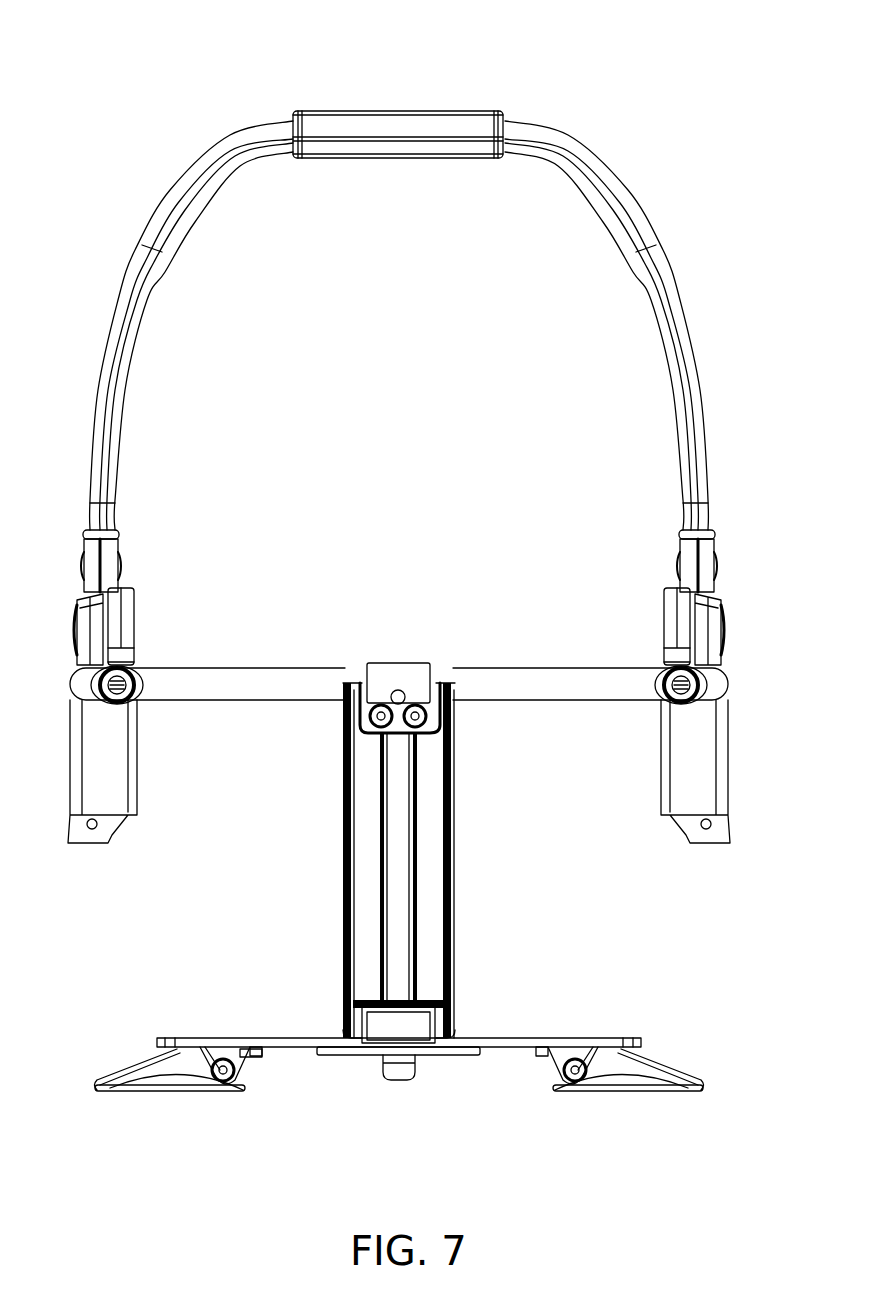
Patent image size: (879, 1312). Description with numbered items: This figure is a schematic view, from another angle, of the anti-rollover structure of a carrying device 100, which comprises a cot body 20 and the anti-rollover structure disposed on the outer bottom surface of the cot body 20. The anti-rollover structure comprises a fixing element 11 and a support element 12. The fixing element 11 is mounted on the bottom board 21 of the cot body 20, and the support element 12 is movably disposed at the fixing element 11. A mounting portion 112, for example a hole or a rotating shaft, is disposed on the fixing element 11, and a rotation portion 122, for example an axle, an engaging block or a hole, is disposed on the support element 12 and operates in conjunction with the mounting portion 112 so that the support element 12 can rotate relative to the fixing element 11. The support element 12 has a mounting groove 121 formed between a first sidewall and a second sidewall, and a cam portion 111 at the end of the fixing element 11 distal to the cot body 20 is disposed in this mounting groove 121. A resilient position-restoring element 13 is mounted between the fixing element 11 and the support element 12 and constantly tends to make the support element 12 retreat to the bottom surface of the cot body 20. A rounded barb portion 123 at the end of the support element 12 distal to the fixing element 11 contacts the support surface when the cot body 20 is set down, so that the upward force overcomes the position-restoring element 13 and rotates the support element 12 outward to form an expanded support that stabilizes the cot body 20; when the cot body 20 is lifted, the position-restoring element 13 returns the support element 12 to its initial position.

The carrying device 100 is at (107, 48).
The cot body 20 is at (113, 370).
The bottom board 21 is at (222, 1043).
The fixing element 11 is at (584, 1060).
The support element 12 is at (640, 1070).
The position-restoring element 13 is at (578, 1082).
The cam portion 111 is at (243, 1063).
The mounting portion 112 is at (210, 1090).
The mounting groove 121 is at (235, 1090).
The rotation portion 122 is at (222, 1090).
The barb portion 123 is at (115, 1087).